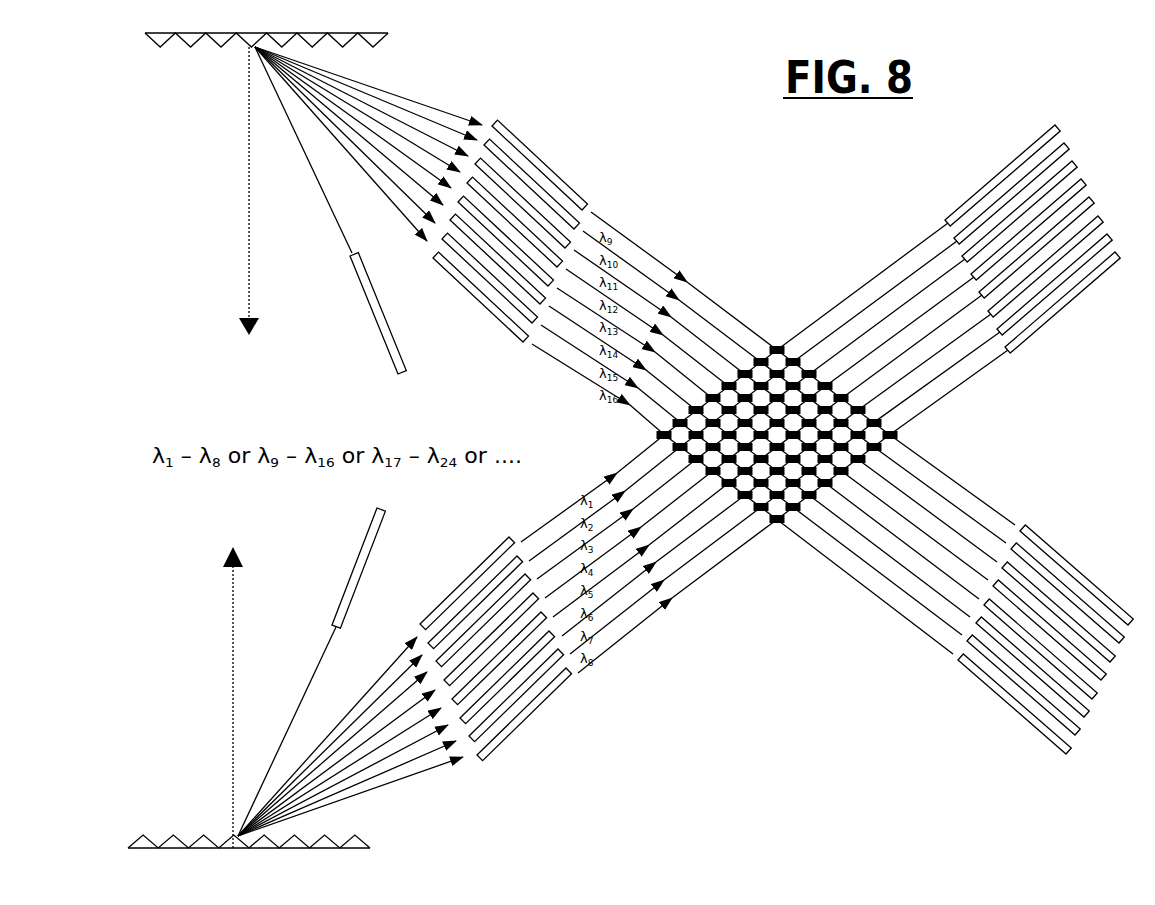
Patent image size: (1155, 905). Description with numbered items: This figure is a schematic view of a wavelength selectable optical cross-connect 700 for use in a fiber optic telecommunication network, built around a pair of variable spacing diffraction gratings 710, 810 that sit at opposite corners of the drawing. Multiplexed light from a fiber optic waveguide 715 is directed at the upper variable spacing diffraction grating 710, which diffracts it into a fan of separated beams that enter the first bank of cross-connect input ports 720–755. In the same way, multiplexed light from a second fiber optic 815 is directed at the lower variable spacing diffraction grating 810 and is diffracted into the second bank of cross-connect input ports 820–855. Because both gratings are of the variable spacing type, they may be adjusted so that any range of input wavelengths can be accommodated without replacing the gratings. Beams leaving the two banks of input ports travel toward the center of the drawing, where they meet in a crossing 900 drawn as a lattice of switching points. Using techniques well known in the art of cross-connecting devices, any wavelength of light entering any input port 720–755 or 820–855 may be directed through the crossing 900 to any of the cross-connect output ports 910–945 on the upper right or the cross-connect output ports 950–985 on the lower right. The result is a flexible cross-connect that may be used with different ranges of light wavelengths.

The wavelength selectable optical cross-connect 700 is at (185, 612).
The variable spacing diffraction grating 710 is at (387, 34).
The fiber optic waveguide 715 is at (407, 378).
The cross-connect input port 720 is at (590, 231).
The cross-connect input port 755 is at (481, 297).
The variable spacing diffraction grating 810 is at (372, 847).
The fiber optic 815 is at (392, 508).
The cross-connect input port 820 is at (548, 649).
The cross-connect input port 855 is at (524, 714).
The crossing 900 is at (777, 533).
The cross-connect output port 910 is at (1032, 290).
The cross-connect output port 945 is at (1062, 302).
The cross-connect output port 950 is at (1016, 655).
The cross-connect output port 985 is at (1014, 704).